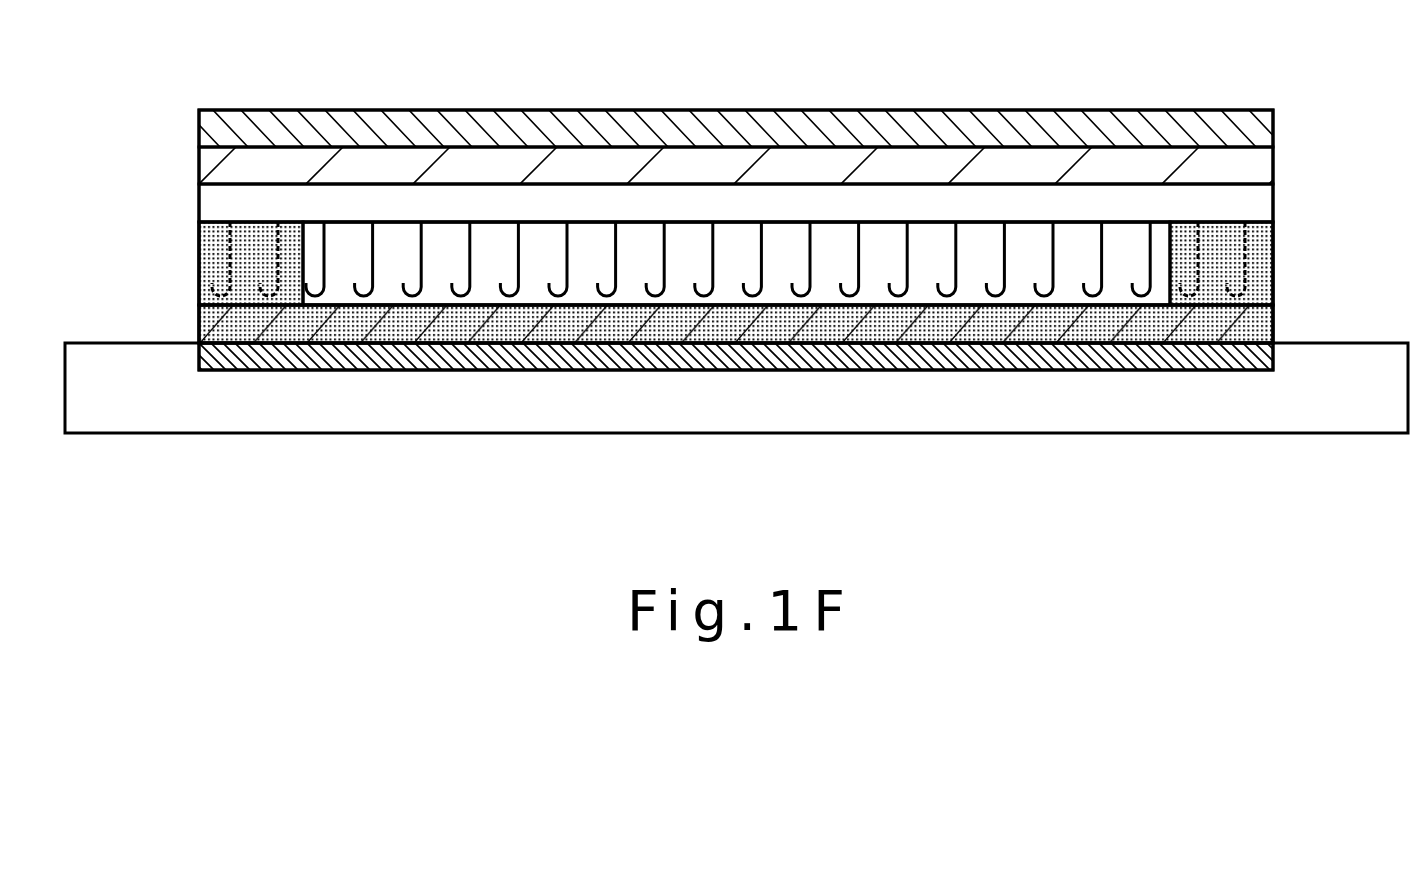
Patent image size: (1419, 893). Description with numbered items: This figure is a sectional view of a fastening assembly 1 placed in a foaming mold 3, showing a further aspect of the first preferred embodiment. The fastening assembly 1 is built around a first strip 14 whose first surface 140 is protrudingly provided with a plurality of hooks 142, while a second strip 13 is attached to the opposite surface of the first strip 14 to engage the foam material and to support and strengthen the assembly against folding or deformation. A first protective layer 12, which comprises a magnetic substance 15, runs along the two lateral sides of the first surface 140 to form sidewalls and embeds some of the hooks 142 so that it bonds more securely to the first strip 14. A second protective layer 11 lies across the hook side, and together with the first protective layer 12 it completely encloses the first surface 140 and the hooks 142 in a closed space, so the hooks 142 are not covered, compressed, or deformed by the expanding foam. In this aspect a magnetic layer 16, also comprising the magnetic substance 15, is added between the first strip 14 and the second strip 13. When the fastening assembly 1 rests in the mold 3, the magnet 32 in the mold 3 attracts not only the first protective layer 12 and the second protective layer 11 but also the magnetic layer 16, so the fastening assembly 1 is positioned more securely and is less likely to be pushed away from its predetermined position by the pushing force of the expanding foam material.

The fastening assembly 1 is at (352, 100).
The foaming mold 3 is at (1255, 440).
The second protective layer 11 is at (1262, 328).
The first protective layer 12 is at (1262, 247).
The second strip 13 is at (1262, 130).
The first strip 14 is at (1262, 208).
The magnetic substance 15 is at (213, 250).
The magnetic layer 16 is at (1262, 170).
The magnet 32 is at (840, 357).
The first surface 140 is at (982, 223).
The hooks 142 is at (518, 255).